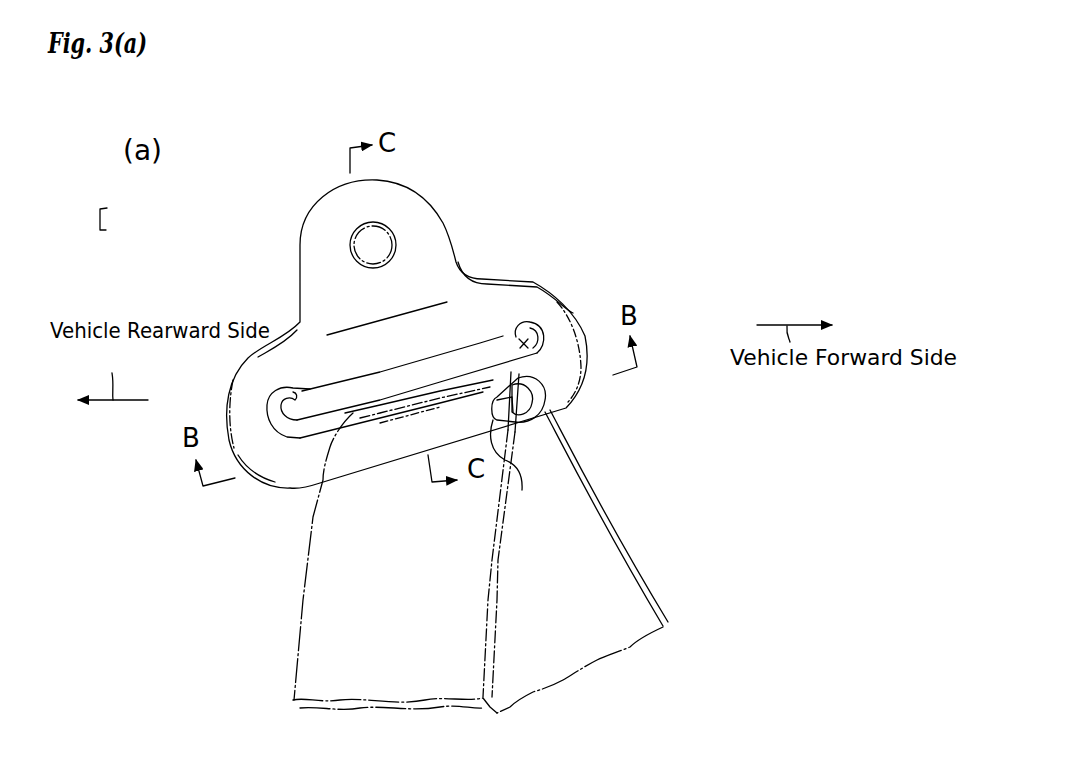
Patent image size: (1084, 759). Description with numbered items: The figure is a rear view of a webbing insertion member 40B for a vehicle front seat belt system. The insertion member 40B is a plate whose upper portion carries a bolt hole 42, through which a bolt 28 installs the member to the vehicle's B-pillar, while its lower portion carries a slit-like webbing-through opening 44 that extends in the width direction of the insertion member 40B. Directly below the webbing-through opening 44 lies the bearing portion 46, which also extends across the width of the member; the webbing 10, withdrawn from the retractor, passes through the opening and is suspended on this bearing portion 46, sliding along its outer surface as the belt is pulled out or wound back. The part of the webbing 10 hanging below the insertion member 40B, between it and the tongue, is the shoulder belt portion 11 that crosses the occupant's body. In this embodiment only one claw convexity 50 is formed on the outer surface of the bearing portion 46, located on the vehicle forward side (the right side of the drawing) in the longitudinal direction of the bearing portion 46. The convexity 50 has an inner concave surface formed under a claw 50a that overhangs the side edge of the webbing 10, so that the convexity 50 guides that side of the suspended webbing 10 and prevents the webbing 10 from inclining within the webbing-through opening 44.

The webbing 10 is at (288, 655).
The shoulder belt portion 11 is at (603, 592).
The bolt 28 is at (365, 243).
The insertion member 40B is at (276, 298).
The bolt hole 42 is at (383, 228).
The webbing-through opening 44 is at (550, 347).
The bearing portion 46 is at (346, 458).
The claw convexity 50 is at (548, 398).
The claw 50a is at (506, 440).